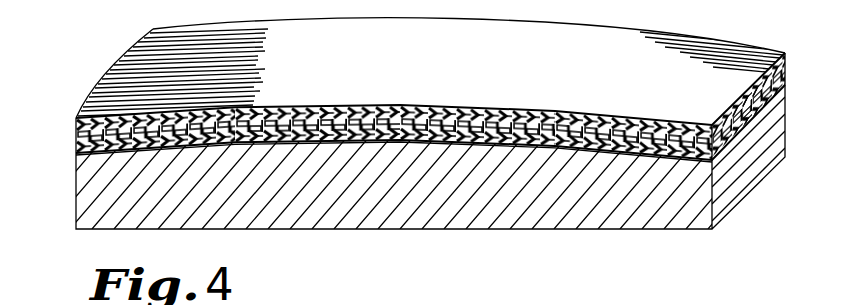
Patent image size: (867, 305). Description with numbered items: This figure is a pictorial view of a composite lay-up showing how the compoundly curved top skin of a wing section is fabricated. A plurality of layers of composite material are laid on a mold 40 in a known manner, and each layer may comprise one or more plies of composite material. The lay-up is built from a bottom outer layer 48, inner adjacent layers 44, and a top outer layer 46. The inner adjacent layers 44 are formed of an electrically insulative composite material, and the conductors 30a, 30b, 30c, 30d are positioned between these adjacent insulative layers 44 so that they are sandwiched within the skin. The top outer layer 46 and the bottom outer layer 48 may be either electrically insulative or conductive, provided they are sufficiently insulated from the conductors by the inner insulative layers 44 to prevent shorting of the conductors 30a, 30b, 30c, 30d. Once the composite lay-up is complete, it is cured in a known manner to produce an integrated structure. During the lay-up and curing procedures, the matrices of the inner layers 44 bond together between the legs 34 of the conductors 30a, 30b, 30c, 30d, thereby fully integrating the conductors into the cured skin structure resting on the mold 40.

The conductor 30a is at (125, 115).
The conductor 30b is at (278, 108).
The conductor 30c is at (500, 107).
The conductor 30d is at (683, 121).
The legs of the conductors 34 is at (662, 60).
The mold 40 is at (678, 218).
The inner adjacent layers 44 is at (403, 106).
The top outer layer 46 is at (77, 121).
The bottom outer layer 48 is at (77, 156).